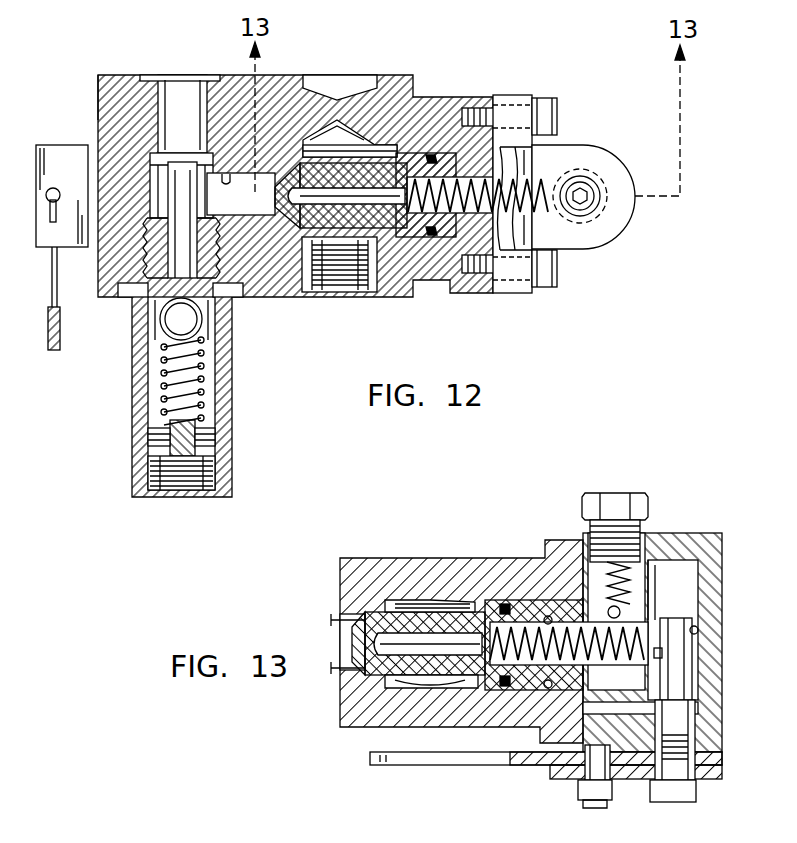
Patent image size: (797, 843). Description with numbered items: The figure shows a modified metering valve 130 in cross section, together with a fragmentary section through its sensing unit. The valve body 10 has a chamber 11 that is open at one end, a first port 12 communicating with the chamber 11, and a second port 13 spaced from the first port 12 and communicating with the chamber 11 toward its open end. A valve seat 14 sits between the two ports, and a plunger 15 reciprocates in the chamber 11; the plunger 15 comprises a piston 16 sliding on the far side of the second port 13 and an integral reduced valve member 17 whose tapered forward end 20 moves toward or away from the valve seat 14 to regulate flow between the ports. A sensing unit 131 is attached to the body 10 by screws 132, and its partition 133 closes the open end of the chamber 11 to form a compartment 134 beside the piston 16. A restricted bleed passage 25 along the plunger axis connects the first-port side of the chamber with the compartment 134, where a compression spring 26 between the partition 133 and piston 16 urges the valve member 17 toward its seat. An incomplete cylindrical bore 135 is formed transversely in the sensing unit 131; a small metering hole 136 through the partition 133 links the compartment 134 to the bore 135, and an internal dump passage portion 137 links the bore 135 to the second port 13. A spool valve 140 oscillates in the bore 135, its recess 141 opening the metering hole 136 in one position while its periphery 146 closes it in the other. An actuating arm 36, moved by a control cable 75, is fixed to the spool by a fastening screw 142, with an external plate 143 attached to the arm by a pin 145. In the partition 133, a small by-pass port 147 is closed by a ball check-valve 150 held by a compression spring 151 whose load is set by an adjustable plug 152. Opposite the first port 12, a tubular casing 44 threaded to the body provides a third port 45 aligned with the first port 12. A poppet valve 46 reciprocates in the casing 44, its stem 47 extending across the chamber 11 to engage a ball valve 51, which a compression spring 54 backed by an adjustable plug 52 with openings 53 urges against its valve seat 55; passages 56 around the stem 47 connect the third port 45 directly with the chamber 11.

In FIG. 12, the valve body 10 is at (123, 85).
In FIG. 12, the chamber 11 is at (228, 172).
In FIG. 12, the first port 12 is at (197, 92).
In FIG. 12, the second port 13 is at (365, 272).
In FIG. 13, the second port 13 is at (418, 683).
In FIG. 12, the valve seat 14 is at (286, 178).
In FIG. 13, the valve seat 14 is at (375, 625).
In FIG. 12, the plunger 15 is at (374, 157).
In FIG. 13, the plunger 15 is at (452, 602).
In FIG. 12, the piston 16 is at (403, 156).
In FIG. 13, the piston 16 is at (484, 600).
In FIG. 12, the valve member 17 is at (335, 150).
In FIG. 13, the valve member 17 is at (410, 600).
In FIG. 12, the tapered forward end 20 is at (290, 230).
In FIG. 12, the restricted bleed passage 25 is at (272, 196).
In FIG. 13, the restricted bleed passage 25 is at (366, 672).
In FIG. 12, the compression spring 26 is at (452, 238).
In FIG. 13, the compression spring 26 is at (482, 680).
In FIG. 12, the actuating arm 36 is at (57, 150).
In FIG. 13, the actuating arm 36 is at (415, 763).
In FIG. 12, the tubular casing 44 is at (135, 385).
In FIG. 12, the third port 45 is at (215, 376).
In FIG. 12, the poppet valve 46 is at (160, 183).
In FIG. 12, the stem 47 is at (150, 262).
In FIG. 12, the ball valve 51 is at (160, 320).
In FIG. 12, the adjustable plug 52 is at (195, 478).
In FIG. 12, the openings 53 is at (150, 456).
In FIG. 12, the compression spring 54 is at (205, 411).
In FIG. 12, the valve seat 55 is at (200, 322).
In FIG. 12, the passages 56 is at (180, 232).
In FIG. 12, the control cable 75 is at (46, 333).
In FIG. 12, the modified metering valve 130 is at (95, 88).
In FIG. 12, the sensing unit 131 is at (518, 90).
In FIG. 13, the sensing unit 131 is at (728, 708).
In FIG. 12, the screws 132 is at (558, 113).
In FIG. 13, the partition 133 is at (567, 690).
In FIG. 12, the compartment 134 is at (432, 155).
In FIG. 13, the compartment 134 is at (548, 692).
In FIG. 13, the incomplete cylindrical bore 135 is at (700, 585).
In FIG. 13, the metering hole 136 is at (655, 645).
In FIG. 13, the internal dump passage portion 137 is at (655, 580).
In FIG. 13, the spool valve 140 is at (700, 733).
In FIG. 13, the recess 141 is at (663, 652).
In FIG. 12, the fastening screw 142 is at (602, 186).
In FIG. 13, the fastening screw 142 is at (698, 792).
In FIG. 12, the external plate 143 is at (598, 236).
In FIG. 13, the external plate 143 is at (636, 780).
In FIG. 13, the pin 145 is at (578, 793).
In FIG. 13, the periphery 146 is at (698, 630).
In FIG. 13, the by-pass port 147 is at (634, 622).
In FIG. 13, the ball check-valve 150 is at (606, 615).
In FIG. 13, the compression spring 151 is at (585, 562).
In FIG. 13, the adjustable plug 152 is at (624, 493).